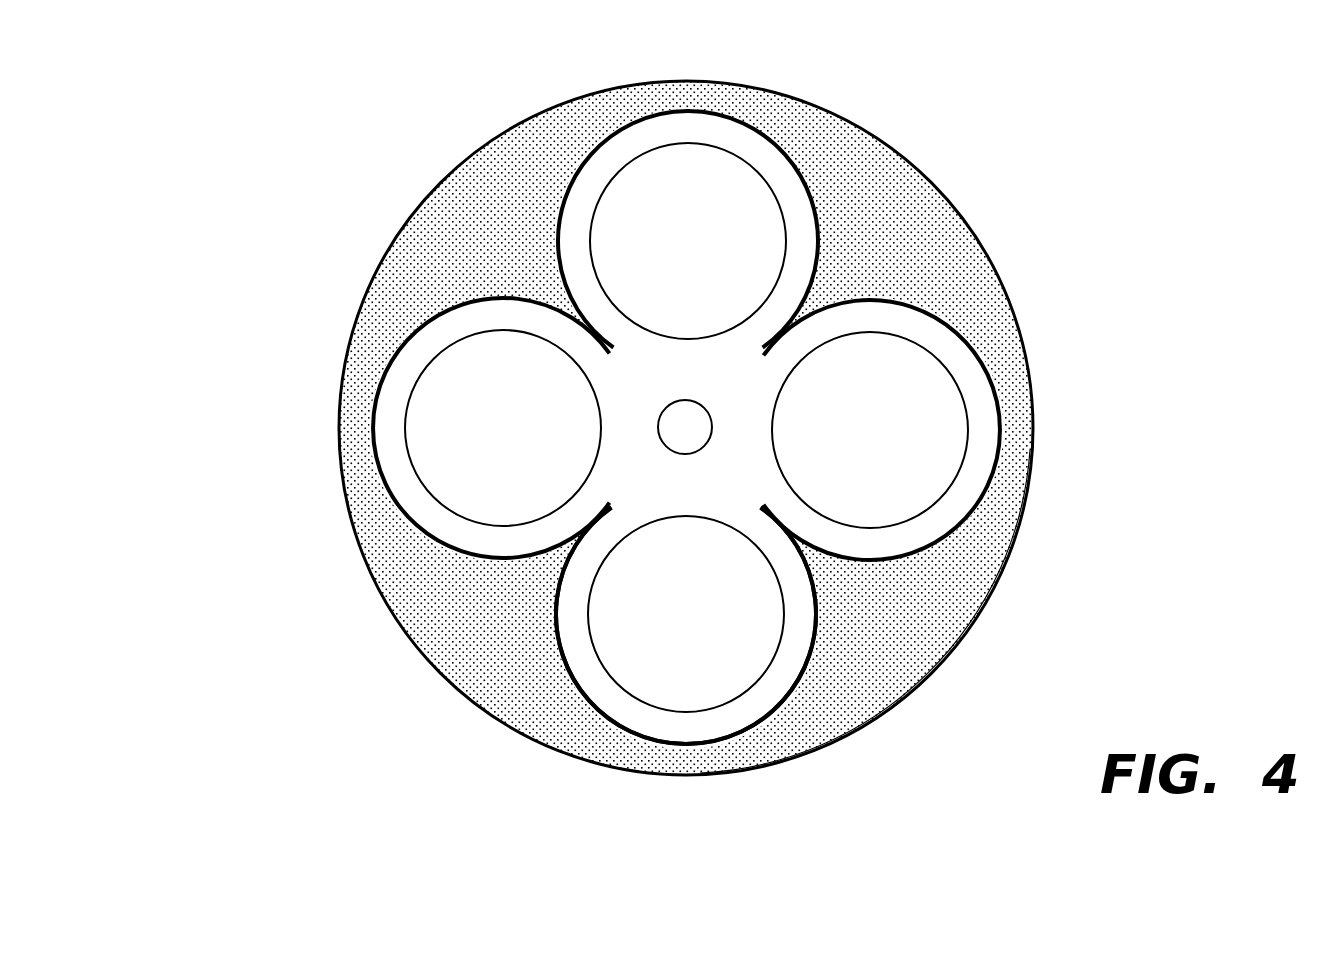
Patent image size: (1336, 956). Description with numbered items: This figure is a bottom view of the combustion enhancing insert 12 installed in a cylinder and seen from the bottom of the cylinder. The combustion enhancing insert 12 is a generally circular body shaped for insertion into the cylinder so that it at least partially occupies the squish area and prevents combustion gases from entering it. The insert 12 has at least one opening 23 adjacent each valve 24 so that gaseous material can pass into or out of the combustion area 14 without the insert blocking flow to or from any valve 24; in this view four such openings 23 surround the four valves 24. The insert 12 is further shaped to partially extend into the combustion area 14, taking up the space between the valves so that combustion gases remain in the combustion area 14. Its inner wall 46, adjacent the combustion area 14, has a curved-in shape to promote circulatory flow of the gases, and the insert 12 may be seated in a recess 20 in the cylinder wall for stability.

The combustion enhancing insert 12 is at (480, 706).
The combustion area 14 is at (463, 537).
The recess 20 is at (708, 407).
The opening 23 is at (637, 120).
The valve 24 is at (790, 228).
The inner wall 46 is at (557, 662).